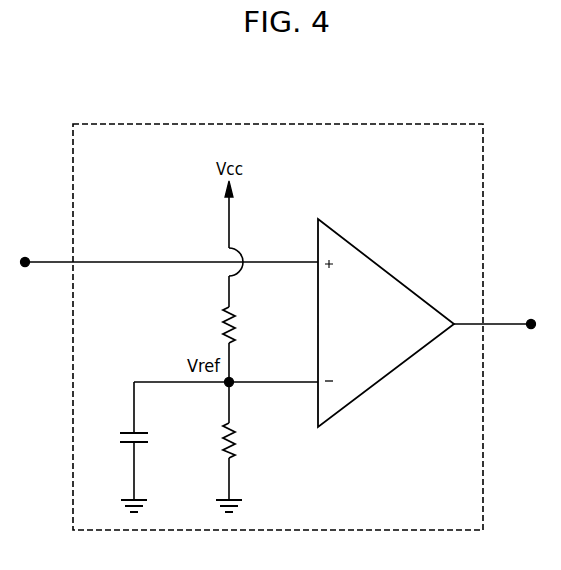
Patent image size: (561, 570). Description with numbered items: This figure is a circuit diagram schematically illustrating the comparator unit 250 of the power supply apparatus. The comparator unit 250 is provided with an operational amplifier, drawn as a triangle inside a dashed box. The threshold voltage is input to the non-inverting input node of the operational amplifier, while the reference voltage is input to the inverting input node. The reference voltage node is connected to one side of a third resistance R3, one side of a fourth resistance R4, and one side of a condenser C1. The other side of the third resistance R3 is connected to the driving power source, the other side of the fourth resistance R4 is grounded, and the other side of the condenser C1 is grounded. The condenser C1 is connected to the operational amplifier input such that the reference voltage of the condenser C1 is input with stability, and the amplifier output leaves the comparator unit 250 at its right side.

The comparator unit 250 is at (457, 124).
The third resistance R3 is at (240, 325).
The fourth resistance R4 is at (241, 440).
The condenser C1 is at (122, 441).